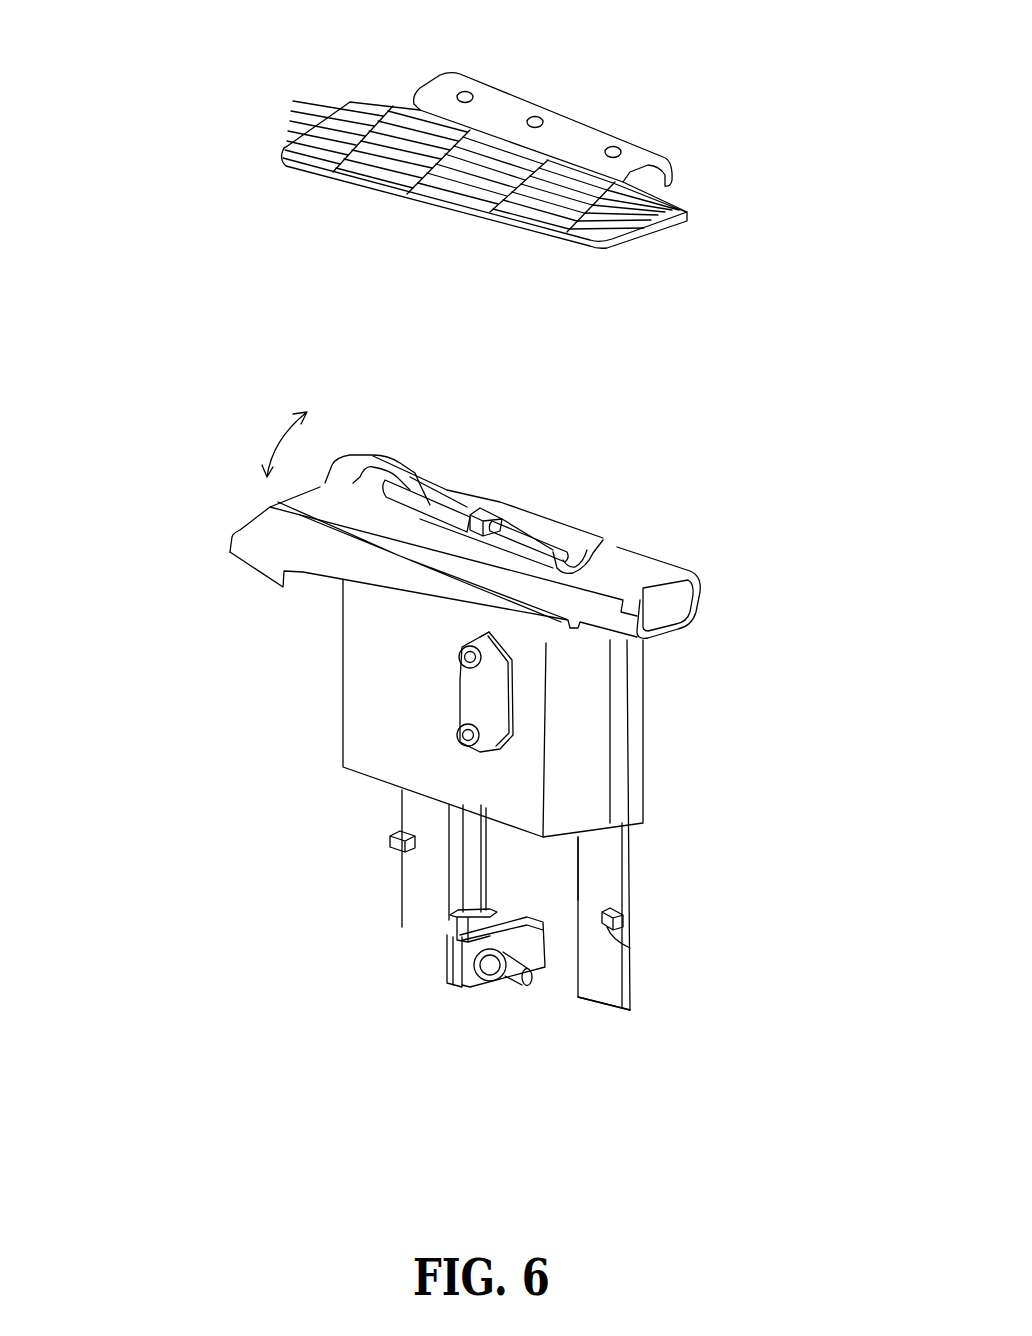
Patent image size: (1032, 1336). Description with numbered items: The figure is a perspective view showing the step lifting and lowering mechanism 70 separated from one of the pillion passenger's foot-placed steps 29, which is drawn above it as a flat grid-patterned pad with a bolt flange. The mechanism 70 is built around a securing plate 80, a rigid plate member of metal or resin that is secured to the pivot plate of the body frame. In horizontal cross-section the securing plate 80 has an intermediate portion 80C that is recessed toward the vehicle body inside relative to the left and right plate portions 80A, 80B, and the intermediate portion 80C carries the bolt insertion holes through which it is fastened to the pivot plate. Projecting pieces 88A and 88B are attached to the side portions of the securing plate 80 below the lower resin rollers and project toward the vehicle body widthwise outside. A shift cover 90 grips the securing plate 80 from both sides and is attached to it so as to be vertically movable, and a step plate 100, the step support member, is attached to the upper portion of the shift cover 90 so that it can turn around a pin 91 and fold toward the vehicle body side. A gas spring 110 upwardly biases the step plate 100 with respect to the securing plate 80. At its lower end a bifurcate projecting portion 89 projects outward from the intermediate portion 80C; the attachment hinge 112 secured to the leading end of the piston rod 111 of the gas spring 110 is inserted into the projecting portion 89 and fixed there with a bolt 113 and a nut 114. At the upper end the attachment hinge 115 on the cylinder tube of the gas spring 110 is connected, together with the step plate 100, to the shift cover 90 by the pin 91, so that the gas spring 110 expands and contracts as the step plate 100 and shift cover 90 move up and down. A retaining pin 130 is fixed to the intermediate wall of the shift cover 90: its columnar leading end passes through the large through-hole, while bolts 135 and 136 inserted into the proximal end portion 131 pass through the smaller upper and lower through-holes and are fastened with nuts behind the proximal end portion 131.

The steps 29 is at (357, 100).
The step lifting and lowering mechanism 70 is at (700, 480).
The step plate 100 is at (237, 528).
The pin 91 is at (447, 488).
The attachment hinge 115 is at (492, 505).
The shift cover 90 is at (337, 723).
The retaining pin 130 is at (528, 712).
The proximal end portion 131 is at (510, 677).
The bolt 135 is at (510, 657).
The bolt 136 is at (510, 733).
The securing plate 80 is at (632, 868).
The left plate portion 80A is at (417, 862).
The right plate portion 80B is at (603, 993).
The intermediate portion 80C is at (568, 968).
The projecting piece 88A is at (388, 843).
The projecting piece 88B is at (616, 935).
The piston rod 111 is at (447, 892).
The gas spring 110 is at (455, 923).
The attachment hinge 112 is at (450, 937).
The bolt 113 is at (449, 970).
The nut 114 is at (487, 985).
The projecting portion 89 is at (536, 965).